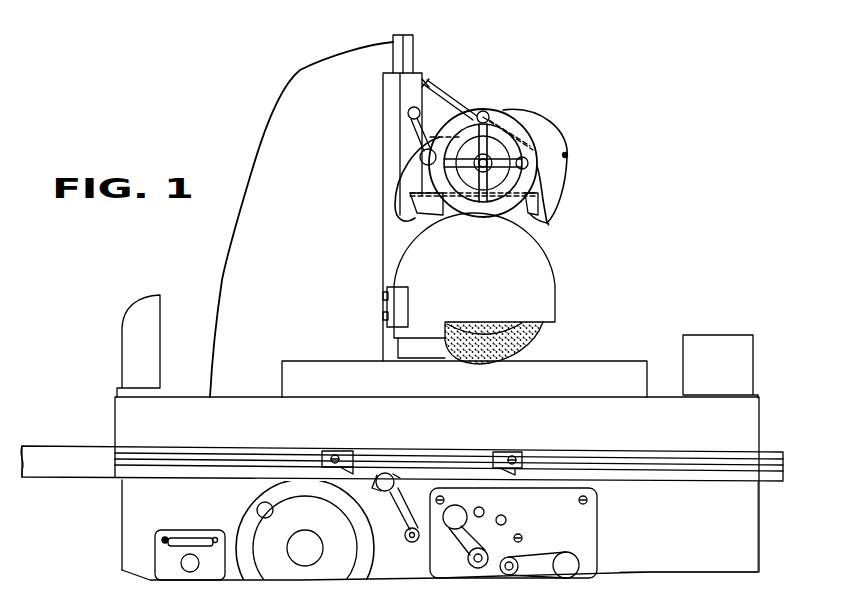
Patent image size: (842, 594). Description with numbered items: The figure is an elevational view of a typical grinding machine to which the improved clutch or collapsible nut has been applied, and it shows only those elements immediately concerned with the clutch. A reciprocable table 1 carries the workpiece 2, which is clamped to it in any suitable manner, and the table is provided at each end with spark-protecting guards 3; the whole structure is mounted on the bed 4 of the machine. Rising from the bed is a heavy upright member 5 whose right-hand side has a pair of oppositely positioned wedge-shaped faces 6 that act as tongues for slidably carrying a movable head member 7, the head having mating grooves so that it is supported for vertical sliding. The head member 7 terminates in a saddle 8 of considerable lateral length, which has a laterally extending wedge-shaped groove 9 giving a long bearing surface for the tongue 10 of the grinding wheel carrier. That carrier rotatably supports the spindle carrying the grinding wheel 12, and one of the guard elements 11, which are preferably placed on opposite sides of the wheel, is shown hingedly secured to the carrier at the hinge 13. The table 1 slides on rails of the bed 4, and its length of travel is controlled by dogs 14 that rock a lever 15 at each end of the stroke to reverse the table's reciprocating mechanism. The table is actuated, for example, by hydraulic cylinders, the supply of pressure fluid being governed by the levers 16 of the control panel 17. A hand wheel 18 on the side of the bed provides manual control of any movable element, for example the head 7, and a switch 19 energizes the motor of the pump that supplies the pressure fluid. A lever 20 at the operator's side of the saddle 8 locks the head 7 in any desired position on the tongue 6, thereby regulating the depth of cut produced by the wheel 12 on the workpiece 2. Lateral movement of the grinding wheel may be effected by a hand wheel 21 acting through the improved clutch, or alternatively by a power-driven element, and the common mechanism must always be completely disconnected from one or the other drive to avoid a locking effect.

The reciprocable table 1 is at (657, 414).
The workpiece 2 is at (630, 365).
The spark-protecting guards 3 is at (733, 343).
The bed 4 is at (722, 524).
The upright member 5 is at (279, 120).
The wedge-shaped faces 6 is at (410, 55).
The movable head member 7 is at (425, 82).
The saddle 8 is at (549, 198).
The wedge-shaped groove 9 is at (538, 206).
The tongue 10 is at (541, 216).
The guard elements 11 is at (553, 272).
The grinding wheel 12 is at (540, 326).
The hinge 13 is at (407, 306).
The dogs 14 is at (354, 451).
The lever 15 is at (396, 518).
The levers 16 is at (480, 545).
The control panel 17 is at (587, 525).
The hand wheel 18 is at (314, 520).
The switch 19 is at (204, 535).
The lever 20 is at (420, 145).
The hand wheel 21 is at (505, 116).